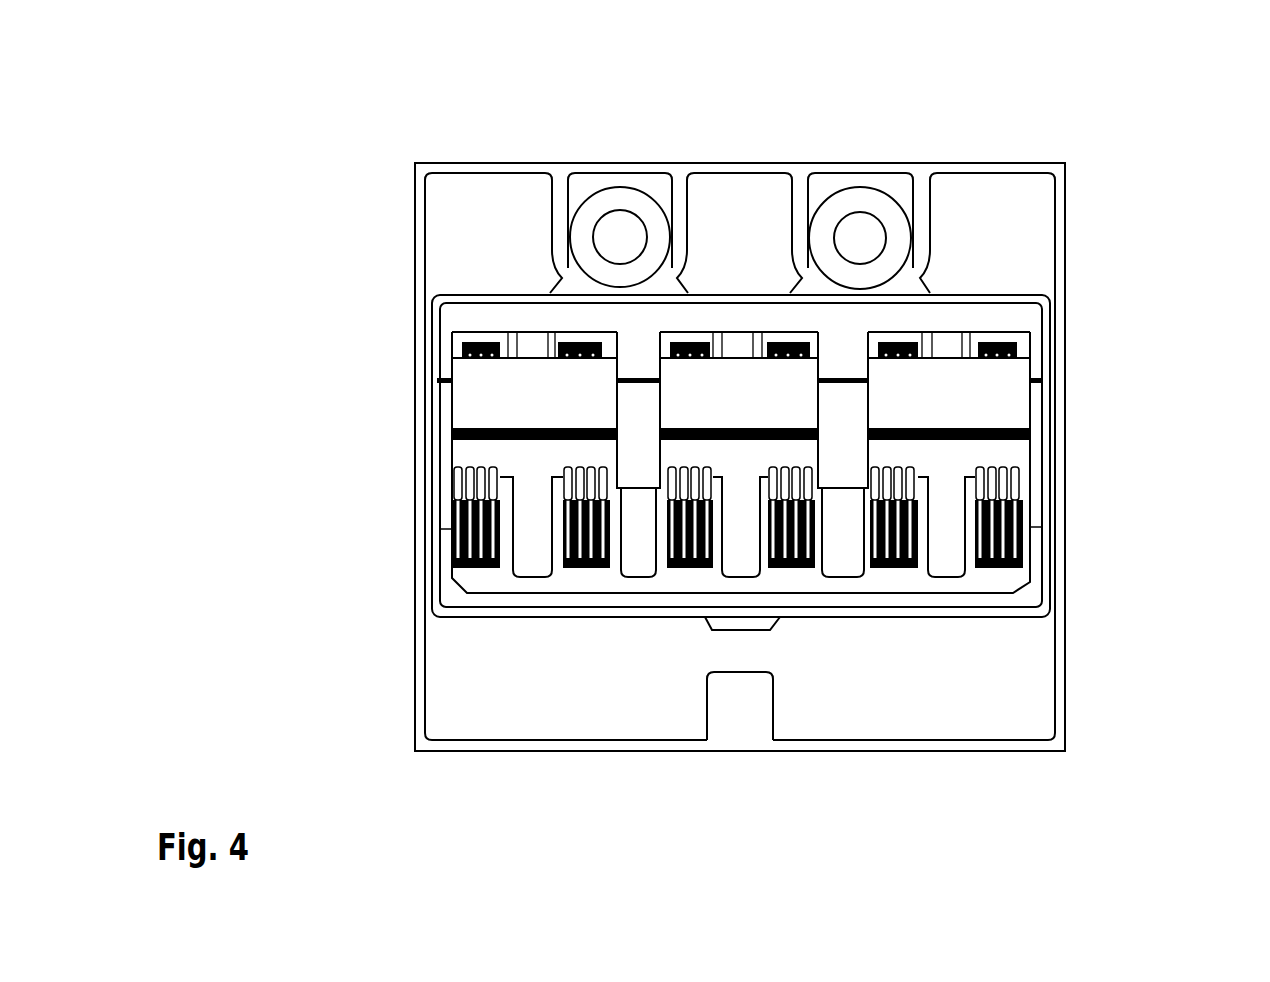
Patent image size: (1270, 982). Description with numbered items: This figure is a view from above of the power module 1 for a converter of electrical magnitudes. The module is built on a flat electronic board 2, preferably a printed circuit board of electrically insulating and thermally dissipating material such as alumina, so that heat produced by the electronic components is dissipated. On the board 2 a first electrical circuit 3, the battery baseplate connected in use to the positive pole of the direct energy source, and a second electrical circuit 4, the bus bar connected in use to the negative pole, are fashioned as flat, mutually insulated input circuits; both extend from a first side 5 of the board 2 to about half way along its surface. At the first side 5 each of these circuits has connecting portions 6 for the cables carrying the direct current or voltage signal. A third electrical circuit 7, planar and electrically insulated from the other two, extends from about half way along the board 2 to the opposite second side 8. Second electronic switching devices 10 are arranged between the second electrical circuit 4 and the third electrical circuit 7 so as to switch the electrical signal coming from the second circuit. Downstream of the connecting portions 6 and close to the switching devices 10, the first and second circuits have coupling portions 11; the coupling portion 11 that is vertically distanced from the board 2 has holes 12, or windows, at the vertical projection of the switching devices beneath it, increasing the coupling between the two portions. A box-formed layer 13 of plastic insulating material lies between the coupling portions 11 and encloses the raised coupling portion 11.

The power module 1 is at (253, 227).
The flat electronic board 2 is at (1060, 463).
The first electrical circuit 3 is at (977, 173).
The second electrical circuit 4 is at (837, 187).
The first side 5 is at (693, 157).
The connecting portions 6 is at (907, 187).
The third electrical circuit 7 is at (1013, 675).
The second side 8 is at (755, 752).
The second electronic switching devices 10 is at (457, 532).
The coupling portions 11 is at (422, 420).
The holes 12 is at (472, 342).
The layer of electrically insulating material 13 is at (500, 412).